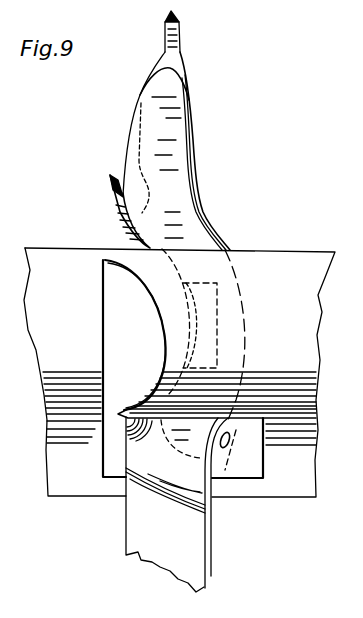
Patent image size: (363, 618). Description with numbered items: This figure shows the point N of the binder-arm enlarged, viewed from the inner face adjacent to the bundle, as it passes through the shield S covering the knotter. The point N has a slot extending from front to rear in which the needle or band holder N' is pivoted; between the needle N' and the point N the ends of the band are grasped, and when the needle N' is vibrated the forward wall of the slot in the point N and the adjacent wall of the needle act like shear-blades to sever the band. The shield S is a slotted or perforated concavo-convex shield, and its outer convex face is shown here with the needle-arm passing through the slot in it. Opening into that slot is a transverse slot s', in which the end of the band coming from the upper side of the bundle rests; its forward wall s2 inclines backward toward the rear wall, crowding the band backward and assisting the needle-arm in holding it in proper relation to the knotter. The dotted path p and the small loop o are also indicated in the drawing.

The needle or band holder N' is at (176, 130).
The point of the binder-arm N is at (164, 153).
The concavo-convex shield S is at (179, 372).
The transverse slot s' is at (210, 364).
The forward wall of the transverse slot s2 is at (136, 335).
The path of needle (dotted) p is at (251, 371).
The loop o is at (225, 440).